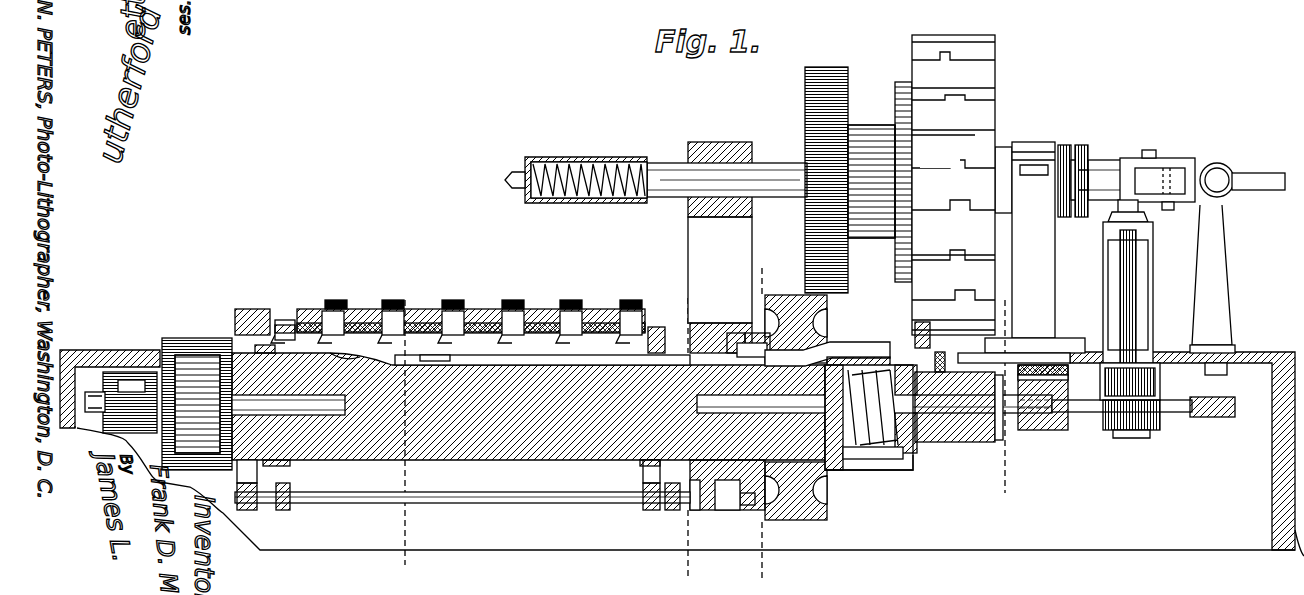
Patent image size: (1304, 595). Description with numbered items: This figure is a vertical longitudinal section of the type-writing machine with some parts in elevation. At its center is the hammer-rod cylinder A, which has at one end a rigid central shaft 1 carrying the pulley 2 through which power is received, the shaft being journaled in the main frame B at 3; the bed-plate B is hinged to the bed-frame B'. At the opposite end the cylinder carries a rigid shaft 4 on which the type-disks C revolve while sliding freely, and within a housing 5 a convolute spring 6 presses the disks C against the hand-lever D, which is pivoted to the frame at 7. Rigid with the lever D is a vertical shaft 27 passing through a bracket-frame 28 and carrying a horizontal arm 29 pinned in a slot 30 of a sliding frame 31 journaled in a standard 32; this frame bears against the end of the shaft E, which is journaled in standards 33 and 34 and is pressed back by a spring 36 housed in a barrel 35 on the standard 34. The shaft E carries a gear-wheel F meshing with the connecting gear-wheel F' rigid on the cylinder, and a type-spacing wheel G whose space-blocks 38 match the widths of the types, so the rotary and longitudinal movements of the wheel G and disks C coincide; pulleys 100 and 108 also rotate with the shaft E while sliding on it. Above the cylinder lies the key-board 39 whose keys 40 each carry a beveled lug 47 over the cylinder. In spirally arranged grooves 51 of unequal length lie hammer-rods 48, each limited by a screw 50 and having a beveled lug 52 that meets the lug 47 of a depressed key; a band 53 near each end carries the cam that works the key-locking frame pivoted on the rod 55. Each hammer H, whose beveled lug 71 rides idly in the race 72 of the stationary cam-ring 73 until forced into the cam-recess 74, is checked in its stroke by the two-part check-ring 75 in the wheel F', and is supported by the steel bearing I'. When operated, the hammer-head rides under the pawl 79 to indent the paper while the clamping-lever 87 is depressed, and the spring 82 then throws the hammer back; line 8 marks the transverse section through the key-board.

The shaft 1 is at (300, 388).
The pulley 2 is at (428, 435).
The journal 3 is at (426, 420).
The shaft 4 is at (944, 418).
The housing 5 is at (871, 426).
The spring 6 is at (873, 409).
The pivot 7 is at (1003, 389).
The section line 8 is at (403, 424).
The vertical shaft 27 is at (1140, 286).
The bracket-frame 28 is at (1146, 305).
The horizontal arm 29 is at (1172, 210).
The slot 30 is at (1198, 165).
The sliding frame 31 is at (1160, 162).
The standard 32 is at (1226, 283).
The standard 33 is at (1035, 247).
The standard 34 is at (720, 247).
The barrel 35 is at (590, 160).
The spring 36 is at (600, 205).
The space-blocks 38 is at (940, 154).
The key-board 39 is at (440, 307).
The key 40 is at (456, 317).
The beveled lug 47 is at (340, 330).
The hammer-rod 48 is at (542, 359).
The screw 50 is at (445, 353).
The grooves 51 is at (345, 361).
The beveled lug 52 is at (400, 348).
The band 53 is at (648, 464).
The rod 55 is at (462, 504).
The beveled lug 71 is at (752, 355).
The race 72 is at (740, 470).
The cam-ring 73 is at (743, 410).
The cam-recess 74 is at (757, 334).
The check-ring 75 is at (782, 298).
The pawl 79 is at (922, 335).
The spring 82 is at (860, 357).
The clamping-lever 87 is at (940, 352).
The pulley 100 is at (1073, 171).
The pulley 108 is at (1082, 150).
The hammer-rod cylinder A is at (528, 406).
The main frame B is at (682, 441).
The bed-frame B' is at (685, 488).
The type-disks C is at (959, 417).
The hand-lever D is at (1212, 418).
The shaft E is at (886, 173).
The gear-wheel F is at (858, 180).
The connecting gear-wheel F' is at (806, 319).
The type-spacing wheel G is at (995, 97).
The hammer H is at (827, 354).
The steel bearing I' is at (700, 505).